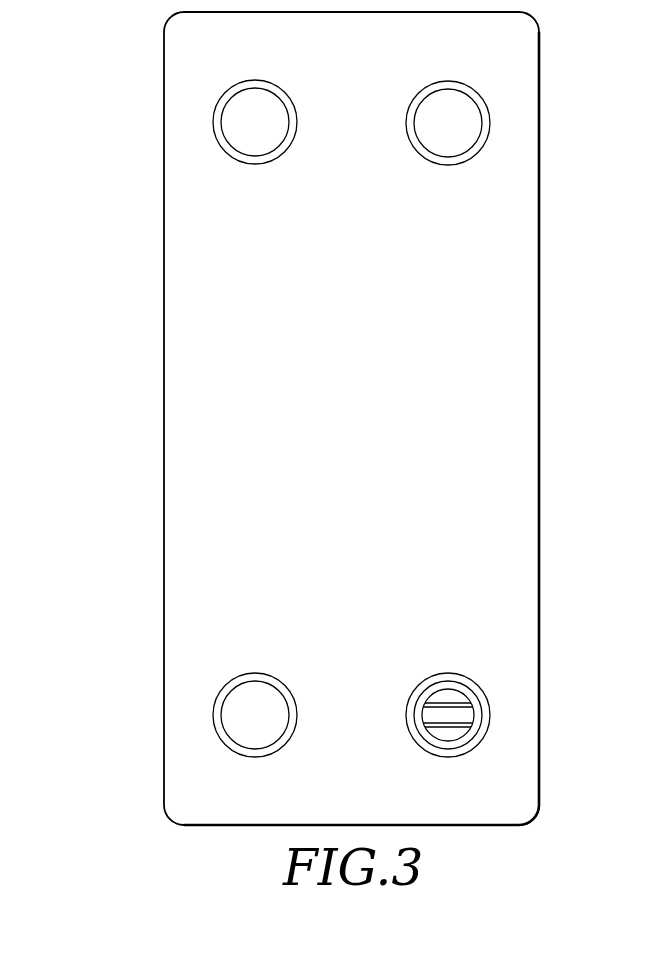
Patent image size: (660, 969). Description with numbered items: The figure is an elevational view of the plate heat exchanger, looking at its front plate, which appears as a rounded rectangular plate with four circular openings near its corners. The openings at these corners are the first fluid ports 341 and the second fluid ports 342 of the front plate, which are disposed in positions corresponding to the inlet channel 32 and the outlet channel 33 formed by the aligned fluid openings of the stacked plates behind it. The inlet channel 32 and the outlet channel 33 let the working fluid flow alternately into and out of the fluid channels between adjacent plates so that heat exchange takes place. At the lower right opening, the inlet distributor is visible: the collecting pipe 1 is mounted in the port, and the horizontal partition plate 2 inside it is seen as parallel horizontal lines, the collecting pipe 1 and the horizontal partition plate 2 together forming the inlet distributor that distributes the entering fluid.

The collecting pipe 1 is at (458, 745).
The horizontal partition plate 2 is at (453, 705).
The inlet channel 32 is at (250, 128).
The outlet channel 33 is at (447, 125).
The first fluid port 341 is at (483, 113).
The second fluid port 342 is at (218, 113).